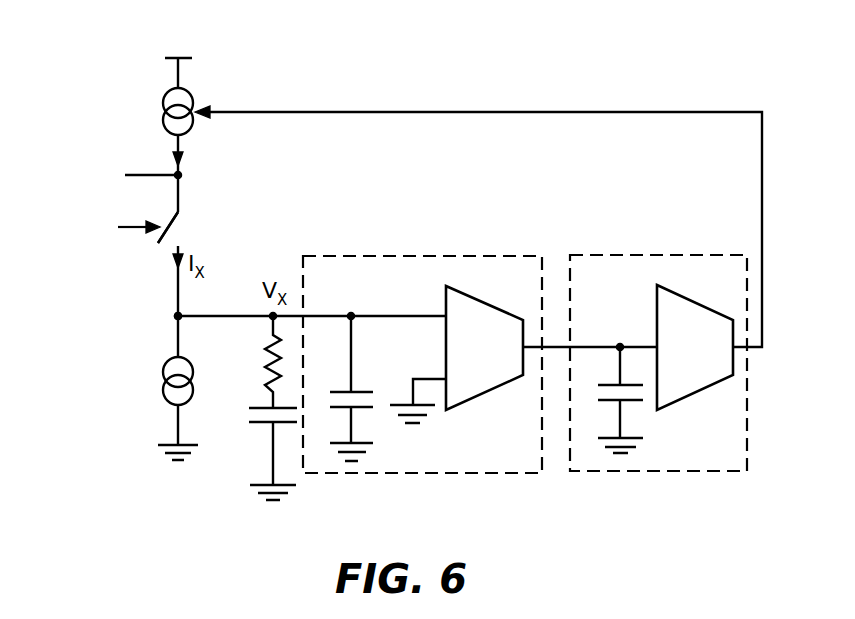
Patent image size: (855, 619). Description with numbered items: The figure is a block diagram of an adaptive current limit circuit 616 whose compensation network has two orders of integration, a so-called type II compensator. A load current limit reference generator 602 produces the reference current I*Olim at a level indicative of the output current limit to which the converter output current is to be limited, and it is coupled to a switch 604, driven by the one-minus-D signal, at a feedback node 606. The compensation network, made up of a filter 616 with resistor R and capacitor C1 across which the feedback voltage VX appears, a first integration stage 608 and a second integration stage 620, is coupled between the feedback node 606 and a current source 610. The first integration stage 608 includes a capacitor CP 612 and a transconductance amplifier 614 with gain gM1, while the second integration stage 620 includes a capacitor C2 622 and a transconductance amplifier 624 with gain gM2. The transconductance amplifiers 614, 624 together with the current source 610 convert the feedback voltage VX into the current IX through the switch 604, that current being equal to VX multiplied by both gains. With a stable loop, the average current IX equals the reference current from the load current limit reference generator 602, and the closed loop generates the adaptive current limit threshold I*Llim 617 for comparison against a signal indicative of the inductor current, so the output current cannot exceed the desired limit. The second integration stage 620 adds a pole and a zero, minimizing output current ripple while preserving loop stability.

The load current limit reference generator 602 is at (166, 404).
The switch 604 is at (183, 231).
The feedback node 606 is at (178, 316).
The first integration stage 608 is at (408, 256).
The current source 610 is at (193, 95).
The capacitor CP 612 is at (365, 408).
The transconductance amplifier 614 is at (492, 301).
The adaptive current limit circuit 616 is at (118, 74).
The adaptive current limit threshold 617 is at (105, 156).
The second integration stage 620 is at (618, 255).
The capacitor C2 622 is at (630, 402).
The transconductance amplifier 624 is at (703, 302).